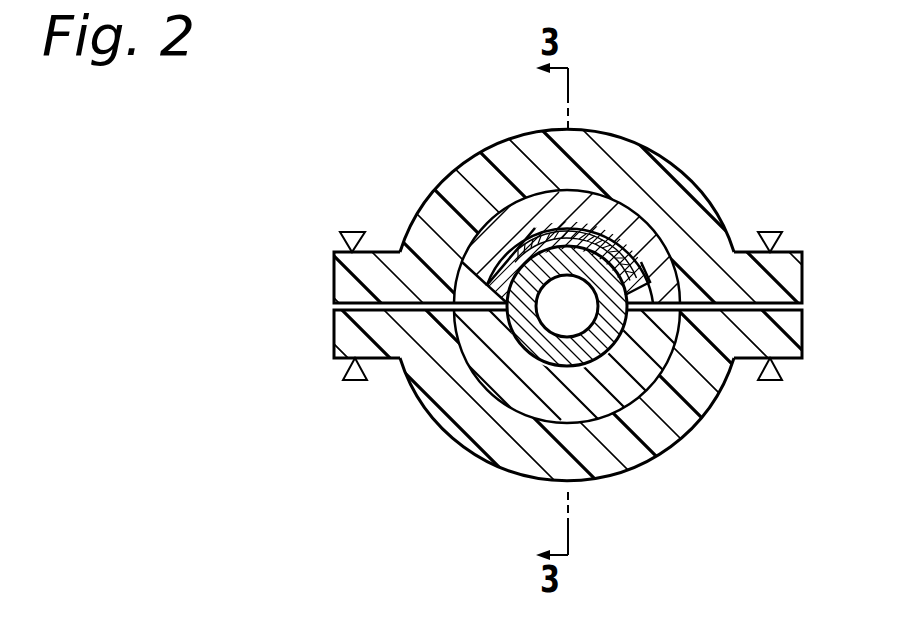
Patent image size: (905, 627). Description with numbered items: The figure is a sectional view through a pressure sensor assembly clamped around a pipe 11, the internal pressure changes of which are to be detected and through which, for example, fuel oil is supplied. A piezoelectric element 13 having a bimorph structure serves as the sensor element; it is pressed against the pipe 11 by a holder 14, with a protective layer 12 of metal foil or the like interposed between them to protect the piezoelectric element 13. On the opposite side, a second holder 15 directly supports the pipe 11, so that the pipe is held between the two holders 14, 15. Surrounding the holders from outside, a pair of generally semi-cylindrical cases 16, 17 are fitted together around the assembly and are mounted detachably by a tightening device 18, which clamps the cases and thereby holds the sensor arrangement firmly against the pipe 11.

The pipe 11 is at (547, 343).
The protective layer 12 is at (623, 283).
The piezoelectric element 13 is at (527, 250).
The holder 14 is at (622, 217).
The holder 15 is at (602, 397).
The semi-cylindrical case 16 is at (682, 212).
The semi-cylindrical case 17 is at (665, 435).
The tightening device 18 is at (352, 230).